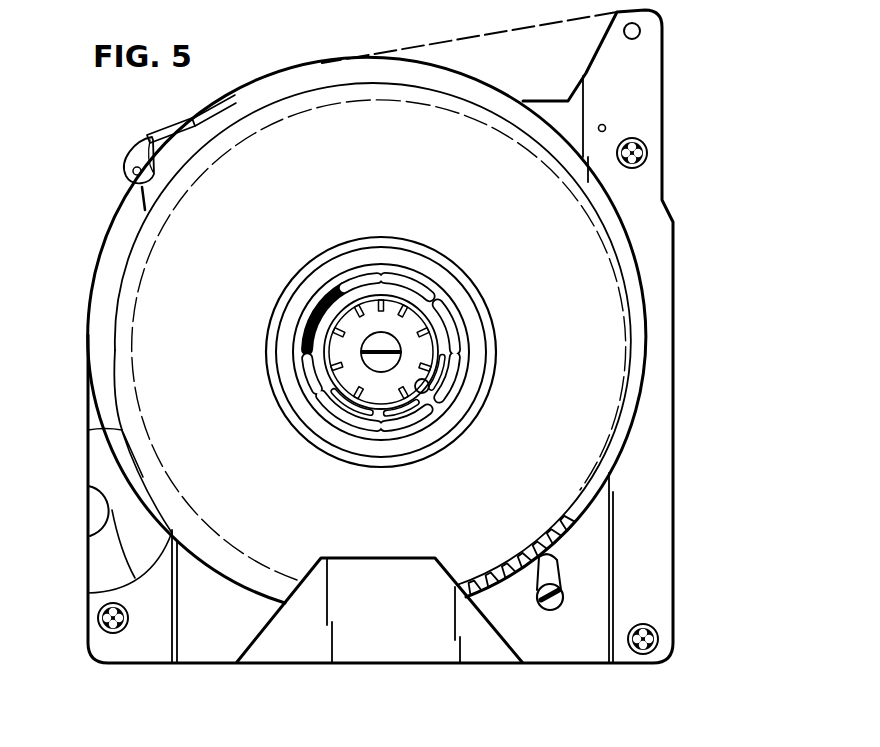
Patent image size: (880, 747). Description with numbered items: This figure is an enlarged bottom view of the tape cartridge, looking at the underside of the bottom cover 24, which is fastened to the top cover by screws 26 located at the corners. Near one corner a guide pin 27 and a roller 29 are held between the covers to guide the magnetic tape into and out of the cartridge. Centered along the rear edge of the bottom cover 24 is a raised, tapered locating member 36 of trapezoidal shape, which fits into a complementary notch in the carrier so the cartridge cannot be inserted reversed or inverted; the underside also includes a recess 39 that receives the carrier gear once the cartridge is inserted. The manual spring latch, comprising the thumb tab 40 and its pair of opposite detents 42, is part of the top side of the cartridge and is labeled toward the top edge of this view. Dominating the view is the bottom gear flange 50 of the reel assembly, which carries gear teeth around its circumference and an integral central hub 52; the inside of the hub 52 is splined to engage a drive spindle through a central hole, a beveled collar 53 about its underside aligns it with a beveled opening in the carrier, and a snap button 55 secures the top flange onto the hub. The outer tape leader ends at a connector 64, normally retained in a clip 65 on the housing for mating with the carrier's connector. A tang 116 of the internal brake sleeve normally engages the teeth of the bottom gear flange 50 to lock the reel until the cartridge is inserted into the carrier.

The bottom cover 24 is at (655, 518).
The screws 26 is at (648, 155).
The guide pin 27 is at (605, 127).
The roller 29 is at (640, 30).
The raised member 36 is at (373, 585).
The recess 39 is at (88, 492).
The thumb tab 40 is at (367, 301).
The detents 42 is at (388, 31).
The bottom gear flange 50 is at (553, 309).
The central hub 52 is at (428, 392).
The beveled collar 53 is at (366, 243).
The snap button 55 is at (381, 365).
The connector 64 is at (125, 162).
The clip 65 is at (152, 135).
The tang 116 is at (563, 591).